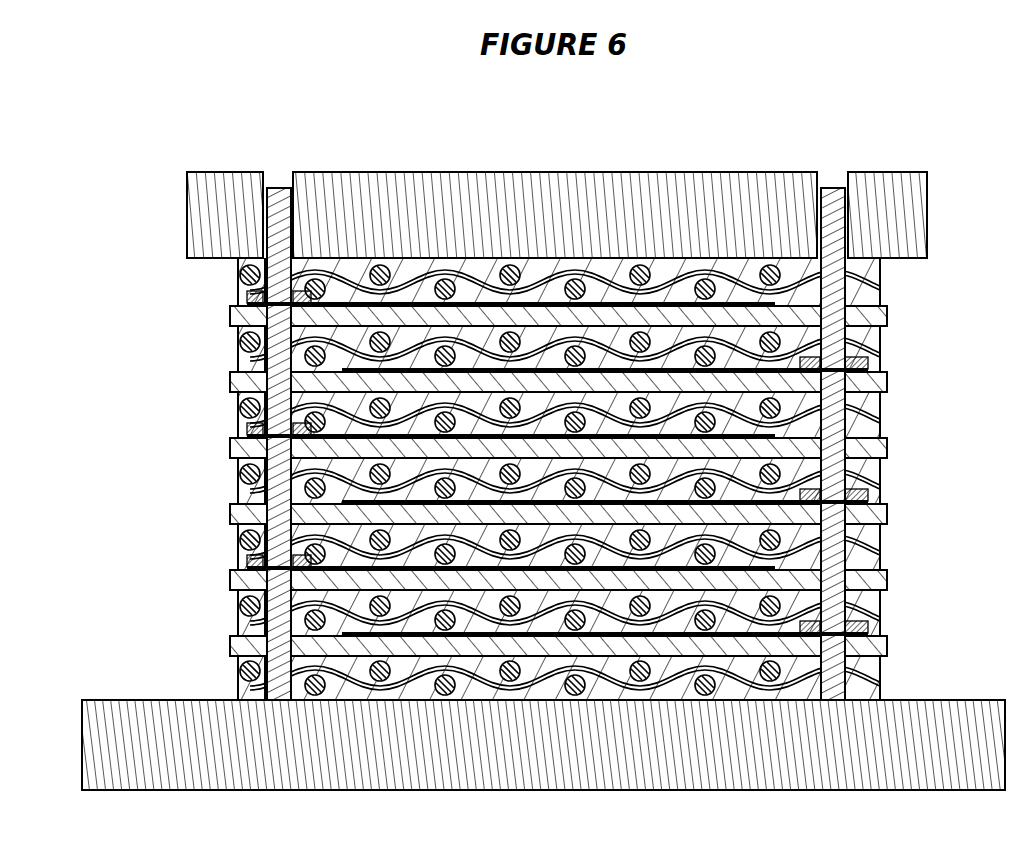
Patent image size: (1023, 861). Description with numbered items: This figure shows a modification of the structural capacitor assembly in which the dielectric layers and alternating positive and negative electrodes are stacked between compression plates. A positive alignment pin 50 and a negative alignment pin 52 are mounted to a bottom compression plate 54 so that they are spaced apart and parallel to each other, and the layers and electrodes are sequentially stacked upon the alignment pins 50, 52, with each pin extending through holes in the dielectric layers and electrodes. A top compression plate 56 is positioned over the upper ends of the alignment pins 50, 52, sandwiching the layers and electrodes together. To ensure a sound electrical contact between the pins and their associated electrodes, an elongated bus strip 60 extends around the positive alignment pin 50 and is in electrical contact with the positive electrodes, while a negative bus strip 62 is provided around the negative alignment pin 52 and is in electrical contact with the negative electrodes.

The positive alignment pin 50 is at (275, 517).
The negative alignment pin 52 is at (833, 578).
The bottom compression plate 54 is at (262, 768).
The top compression plate 56 is at (452, 182).
The bus strip 60 is at (303, 293).
The negative bus strip 62 is at (810, 357).